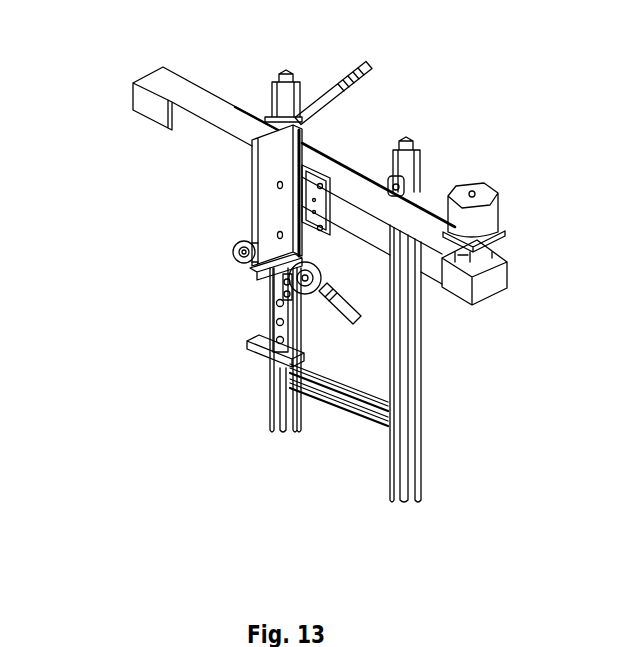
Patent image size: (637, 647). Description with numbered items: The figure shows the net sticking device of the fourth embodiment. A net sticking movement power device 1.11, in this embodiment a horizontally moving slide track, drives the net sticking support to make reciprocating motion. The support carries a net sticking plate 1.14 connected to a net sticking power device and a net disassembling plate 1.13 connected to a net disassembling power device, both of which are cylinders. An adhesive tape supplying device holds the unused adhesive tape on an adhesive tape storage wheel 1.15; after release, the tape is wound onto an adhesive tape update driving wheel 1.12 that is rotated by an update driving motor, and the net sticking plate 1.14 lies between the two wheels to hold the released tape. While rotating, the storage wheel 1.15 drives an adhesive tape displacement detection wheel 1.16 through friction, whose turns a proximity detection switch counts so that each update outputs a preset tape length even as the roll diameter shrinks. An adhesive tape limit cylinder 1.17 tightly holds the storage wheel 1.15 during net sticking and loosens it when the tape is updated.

The net sticking movement power device 1.11 is at (165, 96).
The adhesive tape update driving wheel 1.12 is at (236, 248).
The net disassembling plate 1.13 is at (250, 343).
The net sticking plate 1.14 is at (252, 352).
The adhesive tape storage wheel 1.15 is at (305, 298).
The adhesive tape displacement detection wheel 1.16 is at (292, 358).
The adhesive tape limit cylinder 1.17 is at (352, 317).